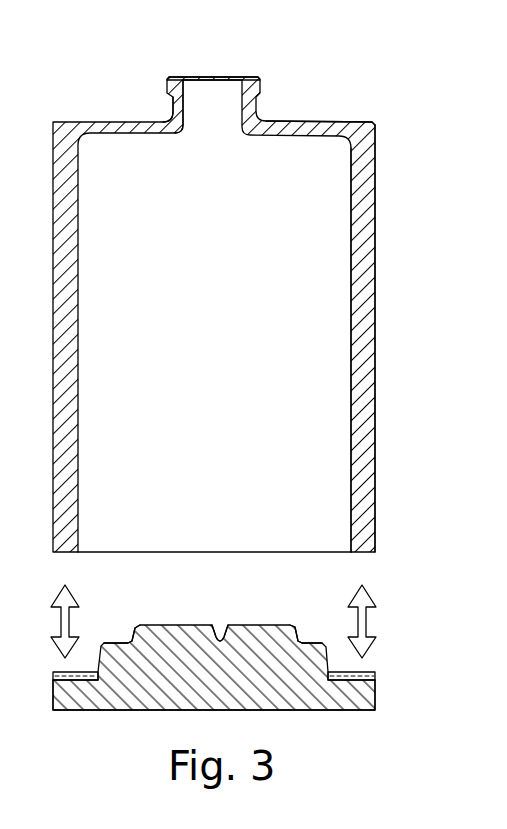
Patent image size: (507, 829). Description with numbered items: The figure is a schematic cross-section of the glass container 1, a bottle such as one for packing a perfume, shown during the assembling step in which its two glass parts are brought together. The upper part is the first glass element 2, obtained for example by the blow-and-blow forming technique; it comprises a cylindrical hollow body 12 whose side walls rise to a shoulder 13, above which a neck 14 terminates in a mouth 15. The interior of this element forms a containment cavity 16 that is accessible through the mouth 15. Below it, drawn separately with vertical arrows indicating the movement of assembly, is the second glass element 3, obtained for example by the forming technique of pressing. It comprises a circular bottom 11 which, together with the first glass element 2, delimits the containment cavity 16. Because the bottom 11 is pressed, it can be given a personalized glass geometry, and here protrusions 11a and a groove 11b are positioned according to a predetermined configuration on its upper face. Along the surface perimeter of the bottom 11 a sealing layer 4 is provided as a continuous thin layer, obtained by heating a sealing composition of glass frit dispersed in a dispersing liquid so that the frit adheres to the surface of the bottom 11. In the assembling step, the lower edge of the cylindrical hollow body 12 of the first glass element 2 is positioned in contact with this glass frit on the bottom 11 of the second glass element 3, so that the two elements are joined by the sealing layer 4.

The container 1 is at (428, 152).
The first glass element 2 is at (378, 140).
The second glass element 3 is at (378, 695).
The sealing layer 4 is at (378, 674).
The circular bottom 11 is at (128, 690).
The protrusions 11a is at (160, 625).
The grooves 11b is at (222, 626).
The cylindrical hollow body 12 is at (375, 350).
The shoulder 13 is at (312, 119).
The neck 14 is at (172, 108).
The mouth 15 is at (241, 93).
The containment cavity 16 is at (312, 233).